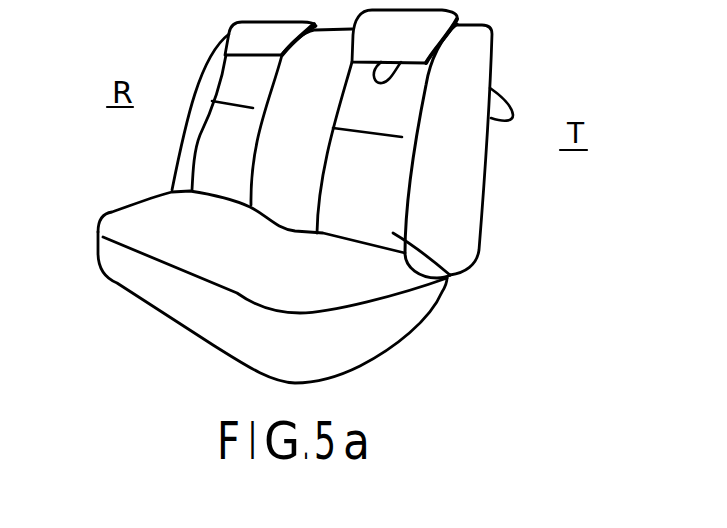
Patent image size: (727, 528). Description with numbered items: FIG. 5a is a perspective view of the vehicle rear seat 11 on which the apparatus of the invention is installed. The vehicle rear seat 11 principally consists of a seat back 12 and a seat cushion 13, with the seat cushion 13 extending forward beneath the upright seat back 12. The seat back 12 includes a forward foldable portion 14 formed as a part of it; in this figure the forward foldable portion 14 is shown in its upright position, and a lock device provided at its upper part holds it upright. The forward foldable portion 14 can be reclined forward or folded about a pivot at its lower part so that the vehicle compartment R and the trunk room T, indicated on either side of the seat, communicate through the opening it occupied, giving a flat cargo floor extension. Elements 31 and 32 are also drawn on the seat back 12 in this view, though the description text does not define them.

The vehicle rear seat 11 is at (496, 45).
The seat back 12 is at (472, 213).
The seat cushion 13 is at (238, 289).
The forward foldable portion 14 is at (450, 275).
The headrest loop 31 is at (379, 83).
The bolster loop 32 is at (510, 98).